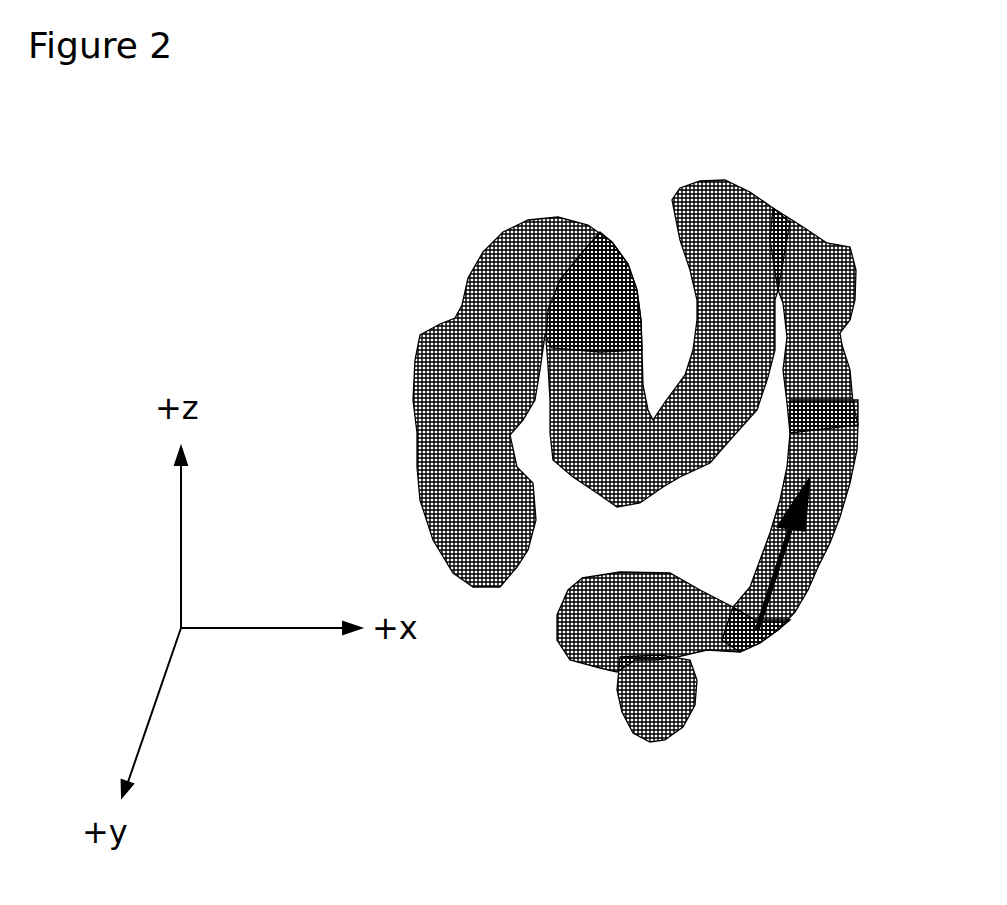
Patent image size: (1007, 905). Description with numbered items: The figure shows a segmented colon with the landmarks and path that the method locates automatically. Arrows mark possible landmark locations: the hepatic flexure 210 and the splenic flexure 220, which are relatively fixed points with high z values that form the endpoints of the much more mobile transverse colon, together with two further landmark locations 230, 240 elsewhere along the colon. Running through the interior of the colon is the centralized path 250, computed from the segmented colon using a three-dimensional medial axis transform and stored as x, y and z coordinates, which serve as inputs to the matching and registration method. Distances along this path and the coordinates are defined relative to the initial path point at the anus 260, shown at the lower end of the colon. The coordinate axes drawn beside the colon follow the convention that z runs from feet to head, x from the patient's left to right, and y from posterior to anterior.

The hepatic flexure 210 is at (527, 340).
The splenic flexure 220 is at (668, 283).
The landmark location 230 is at (852, 269).
The landmark location 240 is at (728, 669).
The centralized path 250 is at (810, 382).
The anus 260 is at (657, 750).